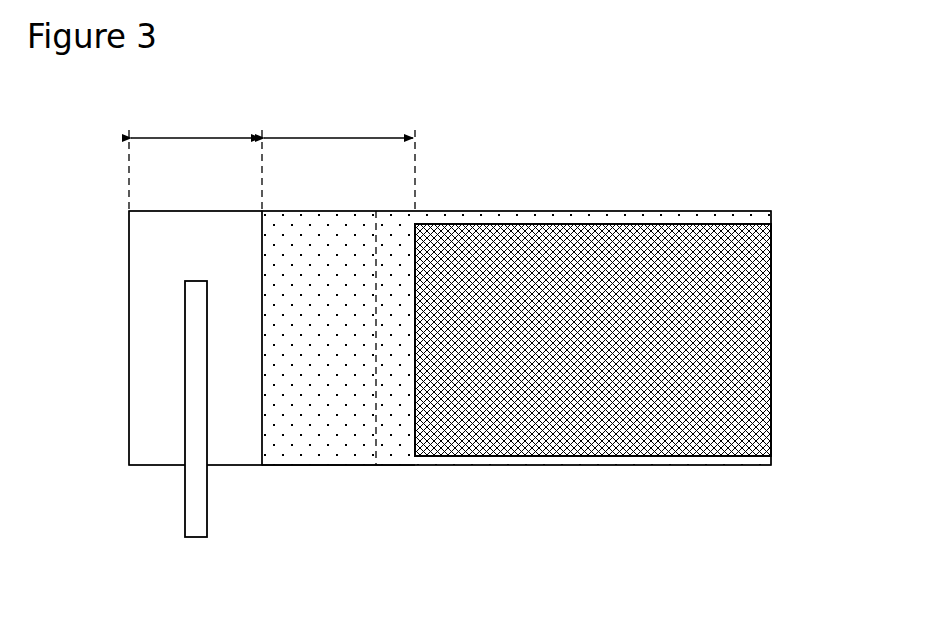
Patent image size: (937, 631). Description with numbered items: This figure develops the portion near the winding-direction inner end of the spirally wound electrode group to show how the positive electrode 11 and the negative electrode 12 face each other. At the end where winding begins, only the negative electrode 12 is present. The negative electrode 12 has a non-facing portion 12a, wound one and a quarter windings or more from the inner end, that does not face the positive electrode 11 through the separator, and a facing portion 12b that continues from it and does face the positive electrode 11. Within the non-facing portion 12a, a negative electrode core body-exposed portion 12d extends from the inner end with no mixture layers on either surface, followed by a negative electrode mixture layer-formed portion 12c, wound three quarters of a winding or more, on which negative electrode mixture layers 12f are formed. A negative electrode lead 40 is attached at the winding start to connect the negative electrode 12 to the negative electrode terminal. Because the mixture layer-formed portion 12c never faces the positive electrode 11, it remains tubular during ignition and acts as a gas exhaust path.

The positive electrode 11 is at (740, 335).
The negative electrode 12 is at (350, 468).
The non-facing portion 12a is at (325, 210).
The facing portion 12b is at (613, 210).
The negative electrode mixture layer-formed portion 12c is at (343, 298).
The negative electrode core body-exposed portion 12d is at (147, 331).
The negative electrode mixture layers 12f is at (300, 450).
The negative electrode lead 40 is at (207, 514).